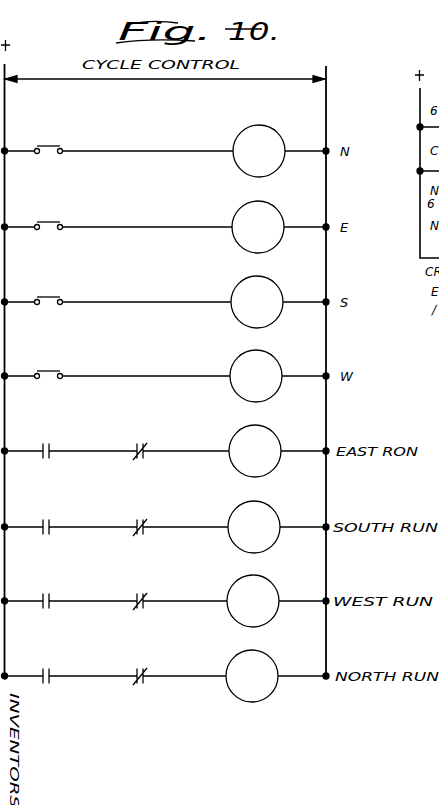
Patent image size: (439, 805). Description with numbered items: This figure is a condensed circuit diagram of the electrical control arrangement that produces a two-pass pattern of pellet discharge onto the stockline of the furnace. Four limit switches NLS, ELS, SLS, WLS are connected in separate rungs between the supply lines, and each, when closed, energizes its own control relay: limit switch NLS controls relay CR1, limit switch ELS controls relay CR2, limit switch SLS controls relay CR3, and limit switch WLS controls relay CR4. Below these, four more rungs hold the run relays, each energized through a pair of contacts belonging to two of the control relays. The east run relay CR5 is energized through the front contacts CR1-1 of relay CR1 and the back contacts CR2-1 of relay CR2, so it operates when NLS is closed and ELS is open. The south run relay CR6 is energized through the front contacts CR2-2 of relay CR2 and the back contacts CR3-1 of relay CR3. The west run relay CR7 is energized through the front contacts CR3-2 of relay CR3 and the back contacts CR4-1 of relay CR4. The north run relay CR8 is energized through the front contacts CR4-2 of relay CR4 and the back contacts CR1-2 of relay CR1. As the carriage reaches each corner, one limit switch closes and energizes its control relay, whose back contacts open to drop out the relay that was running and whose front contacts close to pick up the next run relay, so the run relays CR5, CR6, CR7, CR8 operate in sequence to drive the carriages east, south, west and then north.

The control relay CR1 is at (259, 151).
The control relay CR2 is at (258, 227).
The control relay CR3 is at (257, 302).
The control relay CR4 is at (256, 376).
The east run relay CR5 is at (255, 451).
The south run relay CR6 is at (254, 527).
The west run relay CR7 is at (253, 601).
The north run relay CR8 is at (252, 676).
The limit switch NLS is at (46, 146).
The limit switch ELS is at (46, 222).
The limit switch SLS is at (46, 297).
The limit switch WLS is at (46, 371).
The front contacts CR1-1 is at (54, 450).
The back contacts CR2-1 is at (151, 450).
The front contacts CR2-2 is at (54, 526).
The back contacts CR3-1 is at (152, 526).
The front contacts CR3-2 is at (49, 600).
The back contacts CR4-1 is at (150, 600).
The front contacts CR4-2 is at (49, 675).
The back contacts CR1-2 is at (150, 675).